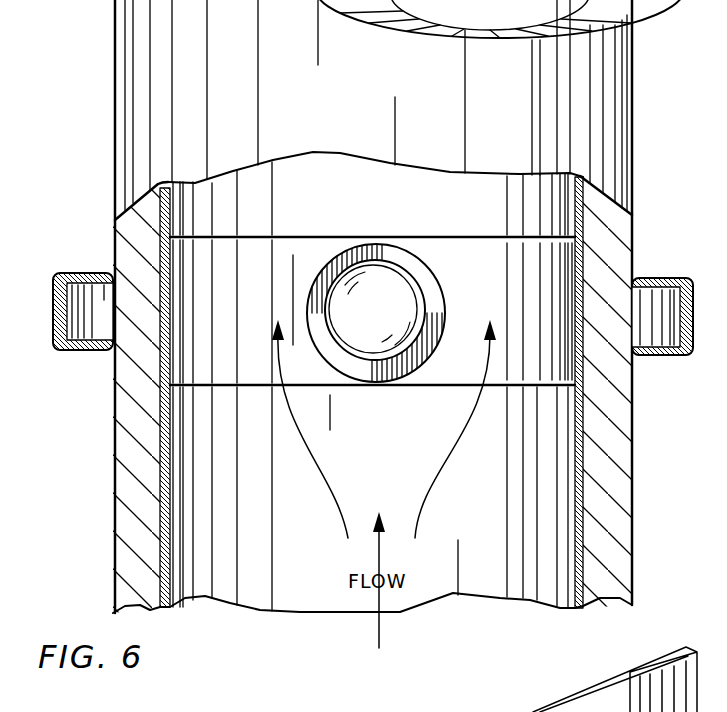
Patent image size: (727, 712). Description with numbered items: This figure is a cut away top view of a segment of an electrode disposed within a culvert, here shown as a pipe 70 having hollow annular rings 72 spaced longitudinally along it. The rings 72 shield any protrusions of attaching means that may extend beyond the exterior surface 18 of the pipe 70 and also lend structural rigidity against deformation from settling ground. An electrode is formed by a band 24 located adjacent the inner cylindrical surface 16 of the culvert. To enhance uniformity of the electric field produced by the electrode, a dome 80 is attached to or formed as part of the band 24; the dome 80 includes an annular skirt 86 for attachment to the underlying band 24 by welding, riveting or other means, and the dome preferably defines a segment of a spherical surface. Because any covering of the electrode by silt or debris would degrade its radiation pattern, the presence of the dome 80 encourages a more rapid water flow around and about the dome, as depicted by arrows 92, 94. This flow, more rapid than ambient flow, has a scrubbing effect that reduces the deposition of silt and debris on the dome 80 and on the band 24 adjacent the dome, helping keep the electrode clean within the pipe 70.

The inner cylindrical surface 16 is at (518, 560).
The exterior surface 18 is at (632, 512).
The band 24 is at (297, 240).
The pipe 70 is at (632, 232).
The hollow annular rings 72 is at (668, 258).
The dome 80 is at (398, 282).
The annular skirt 86 is at (428, 310).
The arrow 92 is at (418, 488).
The arrow 94 is at (352, 502).